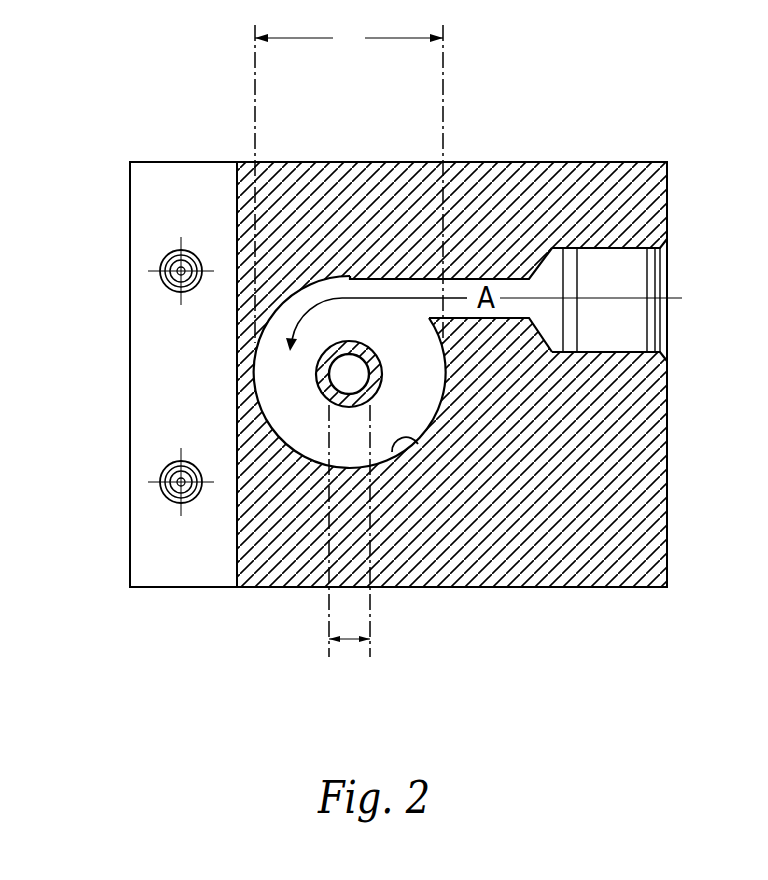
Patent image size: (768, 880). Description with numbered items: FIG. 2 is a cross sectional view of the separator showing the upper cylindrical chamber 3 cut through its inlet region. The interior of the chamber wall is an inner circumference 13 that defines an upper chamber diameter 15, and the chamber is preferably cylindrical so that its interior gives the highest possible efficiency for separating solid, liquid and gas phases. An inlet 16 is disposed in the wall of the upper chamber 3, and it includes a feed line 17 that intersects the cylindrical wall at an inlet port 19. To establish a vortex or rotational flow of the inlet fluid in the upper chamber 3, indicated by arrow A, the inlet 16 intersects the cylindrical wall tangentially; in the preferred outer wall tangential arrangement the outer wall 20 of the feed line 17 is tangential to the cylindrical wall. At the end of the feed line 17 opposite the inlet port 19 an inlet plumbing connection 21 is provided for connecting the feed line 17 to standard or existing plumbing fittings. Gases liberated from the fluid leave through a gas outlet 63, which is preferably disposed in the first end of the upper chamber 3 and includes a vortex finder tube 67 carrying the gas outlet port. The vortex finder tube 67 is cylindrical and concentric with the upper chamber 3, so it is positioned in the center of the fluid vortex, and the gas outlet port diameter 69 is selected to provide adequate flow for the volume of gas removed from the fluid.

The upper cylindrical chamber 3 is at (272, 338).
The inner circumference 13 is at (402, 448).
The upper chamber diameter 15 is at (349, 183).
The inlet 16 is at (473, 268).
The feed line 17 is at (509, 288).
The inlet port 19 is at (408, 342).
The outer wall 20 is at (388, 279).
The inlet plumbing connection 21 is at (632, 268).
The gas outlet 63 is at (310, 396).
The vortex finder tube 67 is at (316, 367).
The gas outlet port diameter 69 is at (350, 642).